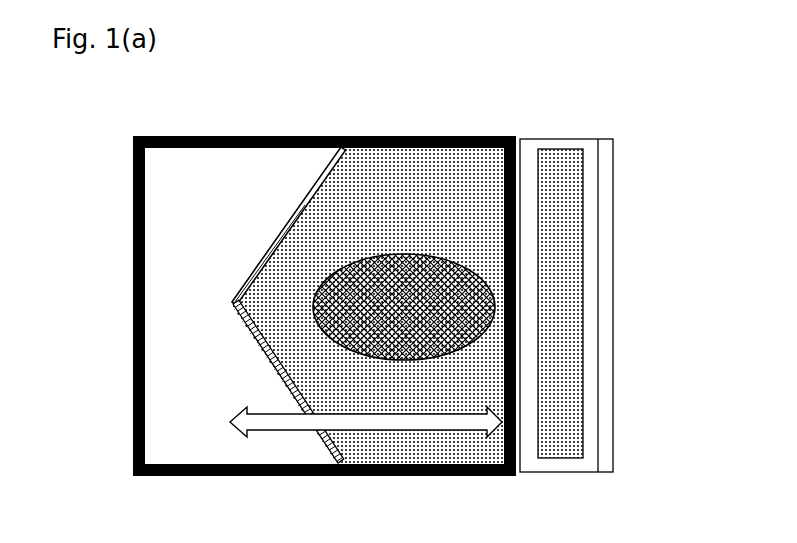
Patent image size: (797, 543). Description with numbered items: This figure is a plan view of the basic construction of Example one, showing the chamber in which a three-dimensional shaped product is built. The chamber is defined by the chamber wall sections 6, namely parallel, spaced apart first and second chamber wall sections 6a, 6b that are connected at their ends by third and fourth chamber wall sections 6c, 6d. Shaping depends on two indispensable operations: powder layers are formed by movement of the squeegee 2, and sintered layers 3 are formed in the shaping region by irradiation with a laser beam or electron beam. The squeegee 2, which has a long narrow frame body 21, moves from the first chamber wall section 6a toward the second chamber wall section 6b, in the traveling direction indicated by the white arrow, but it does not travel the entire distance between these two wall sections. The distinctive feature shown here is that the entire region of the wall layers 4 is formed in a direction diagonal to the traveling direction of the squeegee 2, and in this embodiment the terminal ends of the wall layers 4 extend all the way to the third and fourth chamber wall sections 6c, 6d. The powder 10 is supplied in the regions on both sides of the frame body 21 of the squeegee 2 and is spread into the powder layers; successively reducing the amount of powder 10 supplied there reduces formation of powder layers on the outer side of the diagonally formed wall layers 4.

The squeegee 2 is at (596, 269).
The sintered layer 3 is at (393, 253).
The wall layer 4 is at (258, 268).
The chamber wall section 6 is at (133, 308).
The first chamber wall section 6a is at (516, 230).
The second chamber wall section 6b is at (133, 222).
The third chamber wall section 6c is at (272, 479).
The fourth chamber wall section 6d is at (447, 137).
The powder 10 is at (365, 377).
The frame body 21 is at (580, 243).